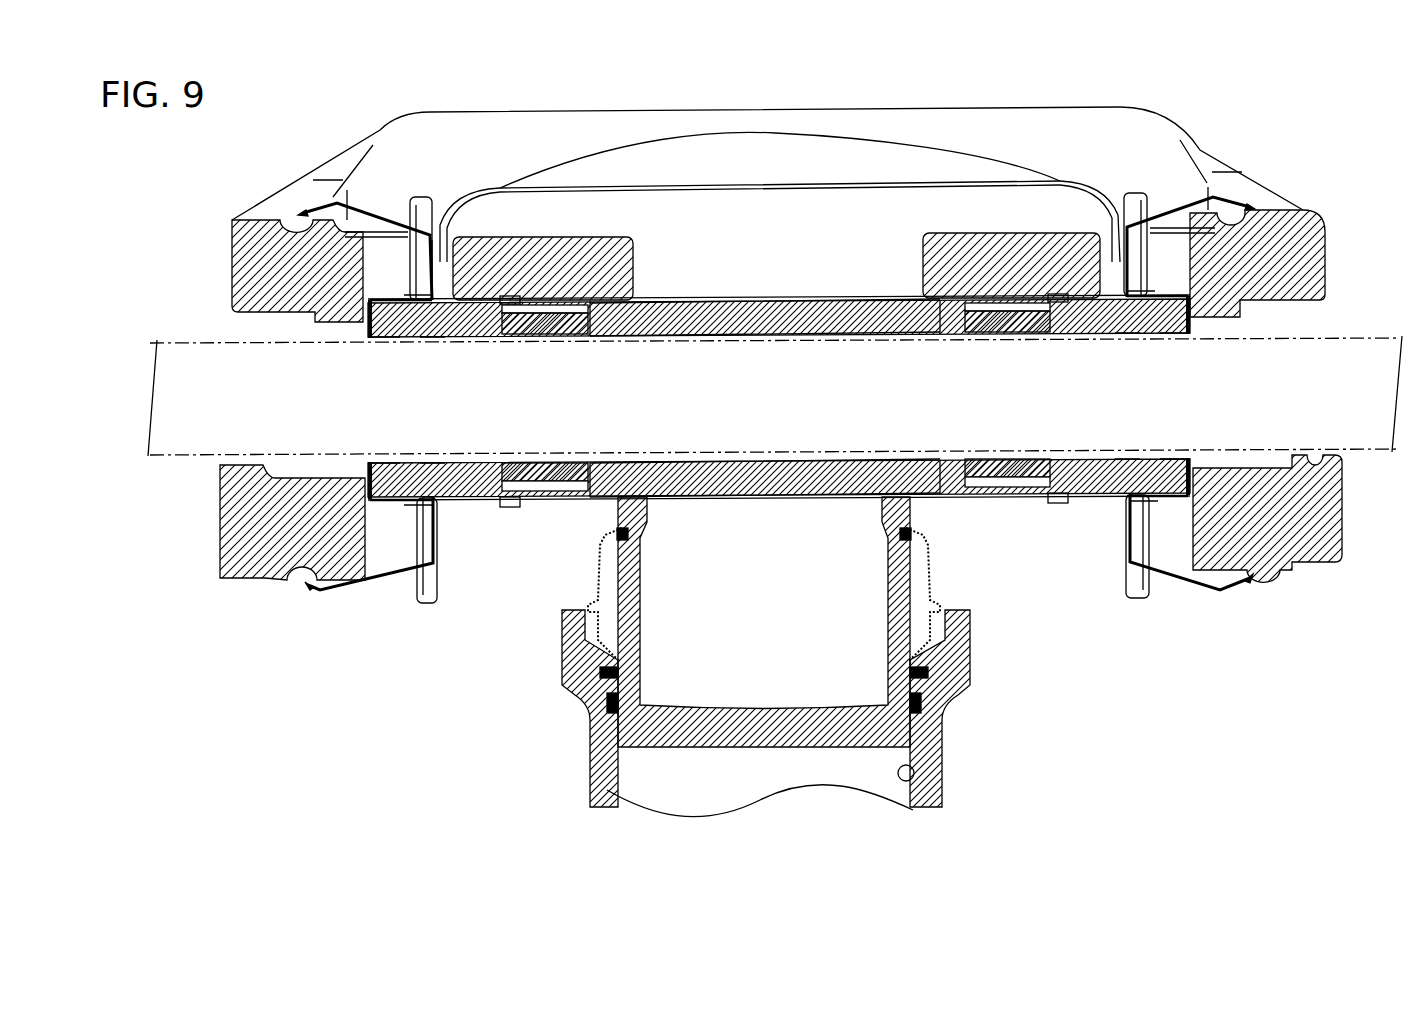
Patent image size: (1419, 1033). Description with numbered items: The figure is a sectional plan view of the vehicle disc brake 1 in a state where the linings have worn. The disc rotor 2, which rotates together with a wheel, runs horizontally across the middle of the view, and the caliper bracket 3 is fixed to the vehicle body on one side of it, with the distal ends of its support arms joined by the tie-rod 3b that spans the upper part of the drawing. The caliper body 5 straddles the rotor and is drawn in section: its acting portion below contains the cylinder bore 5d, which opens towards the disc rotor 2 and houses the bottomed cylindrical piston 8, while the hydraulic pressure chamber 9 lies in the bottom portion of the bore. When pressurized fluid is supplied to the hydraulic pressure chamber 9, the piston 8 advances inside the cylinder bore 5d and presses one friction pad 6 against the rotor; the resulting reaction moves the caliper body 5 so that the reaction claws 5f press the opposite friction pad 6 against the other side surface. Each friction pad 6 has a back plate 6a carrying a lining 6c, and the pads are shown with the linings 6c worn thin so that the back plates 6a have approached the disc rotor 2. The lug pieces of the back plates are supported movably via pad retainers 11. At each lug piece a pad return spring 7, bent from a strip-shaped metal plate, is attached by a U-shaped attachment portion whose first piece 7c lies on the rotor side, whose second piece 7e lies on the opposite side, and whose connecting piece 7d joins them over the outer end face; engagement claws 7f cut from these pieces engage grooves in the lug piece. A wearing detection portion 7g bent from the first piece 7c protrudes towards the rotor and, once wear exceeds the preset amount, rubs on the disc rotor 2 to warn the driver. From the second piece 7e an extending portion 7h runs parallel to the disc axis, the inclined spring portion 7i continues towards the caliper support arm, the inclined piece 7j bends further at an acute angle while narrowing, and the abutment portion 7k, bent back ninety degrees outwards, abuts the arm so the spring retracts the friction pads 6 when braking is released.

The vehicle disc brake 1 is at (764, 54).
The disc rotor 2 is at (1368, 340).
The caliper bracket 3 is at (1005, 98).
The tie-rod 3b is at (878, 125).
The caliper body 5 is at (572, 768).
The cylinder bore 5d is at (914, 778).
The reaction claws 5f is at (633, 265).
The friction pad 6 is at (793, 258).
The back plate 6a is at (727, 310).
The lining 6c is at (765, 330).
The pad return spring 7 is at (393, 210).
The first piece 7c is at (385, 340).
The connecting piece 7d is at (357, 335).
The second piece 7e is at (387, 302).
The engagement claw 7f is at (408, 298).
The wearing detection portion 7g is at (433, 340).
The extending portion 7h is at (440, 262).
The spring portion 7i is at (373, 212).
The inclined piece 7j is at (318, 216).
The abutment portion 7k is at (283, 212).
The piston 8 is at (630, 634).
The hydraulic pressure chamber 9 is at (680, 790).
The pad retainer 11 is at (423, 207).